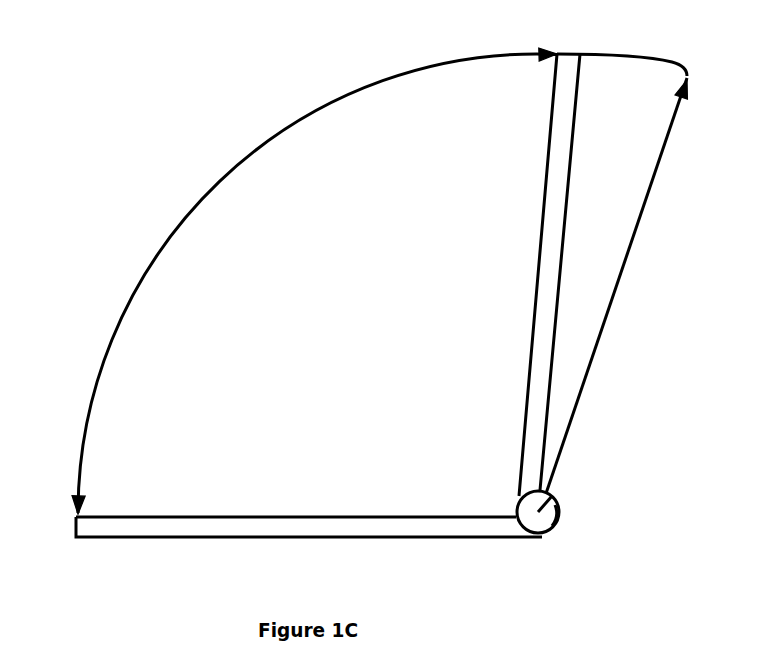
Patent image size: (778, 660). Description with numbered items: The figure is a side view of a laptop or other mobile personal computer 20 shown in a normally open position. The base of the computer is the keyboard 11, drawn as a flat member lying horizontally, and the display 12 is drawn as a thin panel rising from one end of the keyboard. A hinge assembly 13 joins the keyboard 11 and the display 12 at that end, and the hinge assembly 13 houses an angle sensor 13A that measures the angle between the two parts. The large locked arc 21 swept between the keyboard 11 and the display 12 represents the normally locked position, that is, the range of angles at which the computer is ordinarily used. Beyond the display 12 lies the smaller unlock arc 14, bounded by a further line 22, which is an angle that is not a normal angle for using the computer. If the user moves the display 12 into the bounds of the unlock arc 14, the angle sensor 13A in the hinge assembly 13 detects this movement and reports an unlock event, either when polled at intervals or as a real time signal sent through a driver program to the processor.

The mobile computer in normally open position 20 is at (163, 75).
The locked arc 21 is at (170, 238).
The keyboard 11 is at (455, 540).
The display 12 is at (540, 247).
The rotation path of panel edge 22 is at (660, 168).
The unlock arc 14 is at (637, 54).
The hinge assembly 13 is at (562, 507).
The angle sensor 13A is at (557, 528).